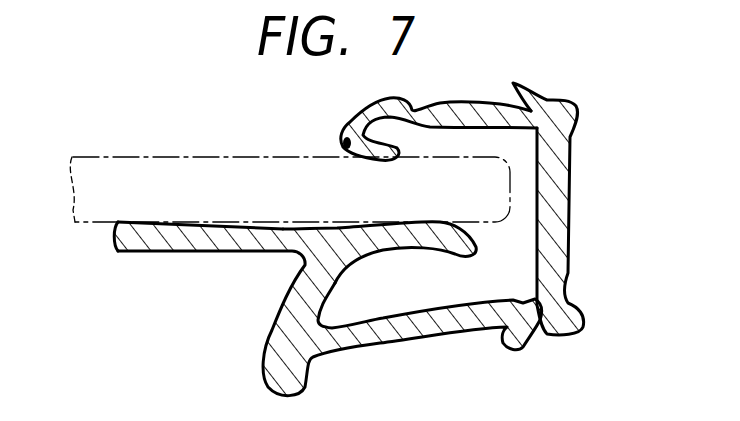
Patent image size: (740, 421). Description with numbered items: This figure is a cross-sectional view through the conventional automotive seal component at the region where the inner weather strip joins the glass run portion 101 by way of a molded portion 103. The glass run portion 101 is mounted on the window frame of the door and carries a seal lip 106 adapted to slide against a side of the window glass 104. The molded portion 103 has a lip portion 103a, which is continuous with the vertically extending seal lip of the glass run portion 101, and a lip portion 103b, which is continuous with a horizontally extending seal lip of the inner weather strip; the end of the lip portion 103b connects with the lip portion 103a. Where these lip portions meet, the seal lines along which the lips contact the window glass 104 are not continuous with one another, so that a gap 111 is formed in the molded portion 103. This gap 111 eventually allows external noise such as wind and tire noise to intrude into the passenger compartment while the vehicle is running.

The glass run portion 101 is at (586, 196).
The molded portion 103 is at (206, 258).
The lip portion 103a is at (401, 238).
The lip portion 103b is at (122, 253).
The window glass 104 is at (97, 155).
The seal lip 106 is at (387, 157).
The gap 111 is at (330, 230).